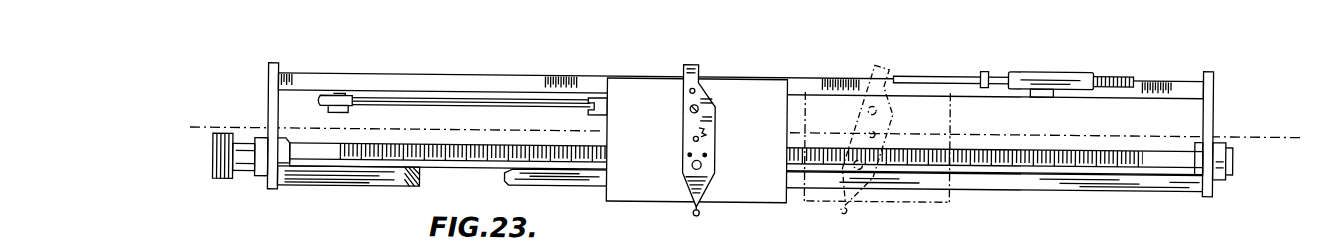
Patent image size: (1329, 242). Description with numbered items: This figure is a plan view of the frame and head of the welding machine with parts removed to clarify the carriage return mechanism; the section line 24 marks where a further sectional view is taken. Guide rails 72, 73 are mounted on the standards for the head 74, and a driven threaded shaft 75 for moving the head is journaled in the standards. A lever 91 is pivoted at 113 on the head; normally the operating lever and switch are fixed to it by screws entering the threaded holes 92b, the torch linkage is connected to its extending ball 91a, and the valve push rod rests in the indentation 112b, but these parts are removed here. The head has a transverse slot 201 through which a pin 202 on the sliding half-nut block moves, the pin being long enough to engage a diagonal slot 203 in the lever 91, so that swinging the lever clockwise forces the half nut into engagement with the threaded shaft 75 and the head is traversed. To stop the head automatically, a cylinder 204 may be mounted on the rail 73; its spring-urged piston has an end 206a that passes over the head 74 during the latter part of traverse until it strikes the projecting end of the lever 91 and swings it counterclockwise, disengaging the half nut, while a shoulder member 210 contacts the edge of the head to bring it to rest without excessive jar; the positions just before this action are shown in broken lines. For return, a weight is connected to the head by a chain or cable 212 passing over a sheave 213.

The section line 24- 24 is at (193, 135).
The guide rail 72 is at (512, 182).
The guide rail 73 is at (505, 76).
The head 74 is at (977, 117).
The threaded shaft 75 is at (427, 145).
The lever 91 is at (715, 102).
The ball 91a is at (700, 210).
The threaded holes 92b is at (708, 153).
The indentation 112b is at (698, 85).
The pivot 113 is at (715, 168).
The transverse slot 201 is at (707, 140).
The pin 202 is at (707, 133).
The diagonal slot 203 is at (690, 151).
The cylinder 204 is at (1035, 68).
The end of the piston 206a is at (897, 70).
The shoulder member 210 is at (984, 64).
The chain or cable 212 is at (498, 97).
The sheave 213 is at (325, 113).